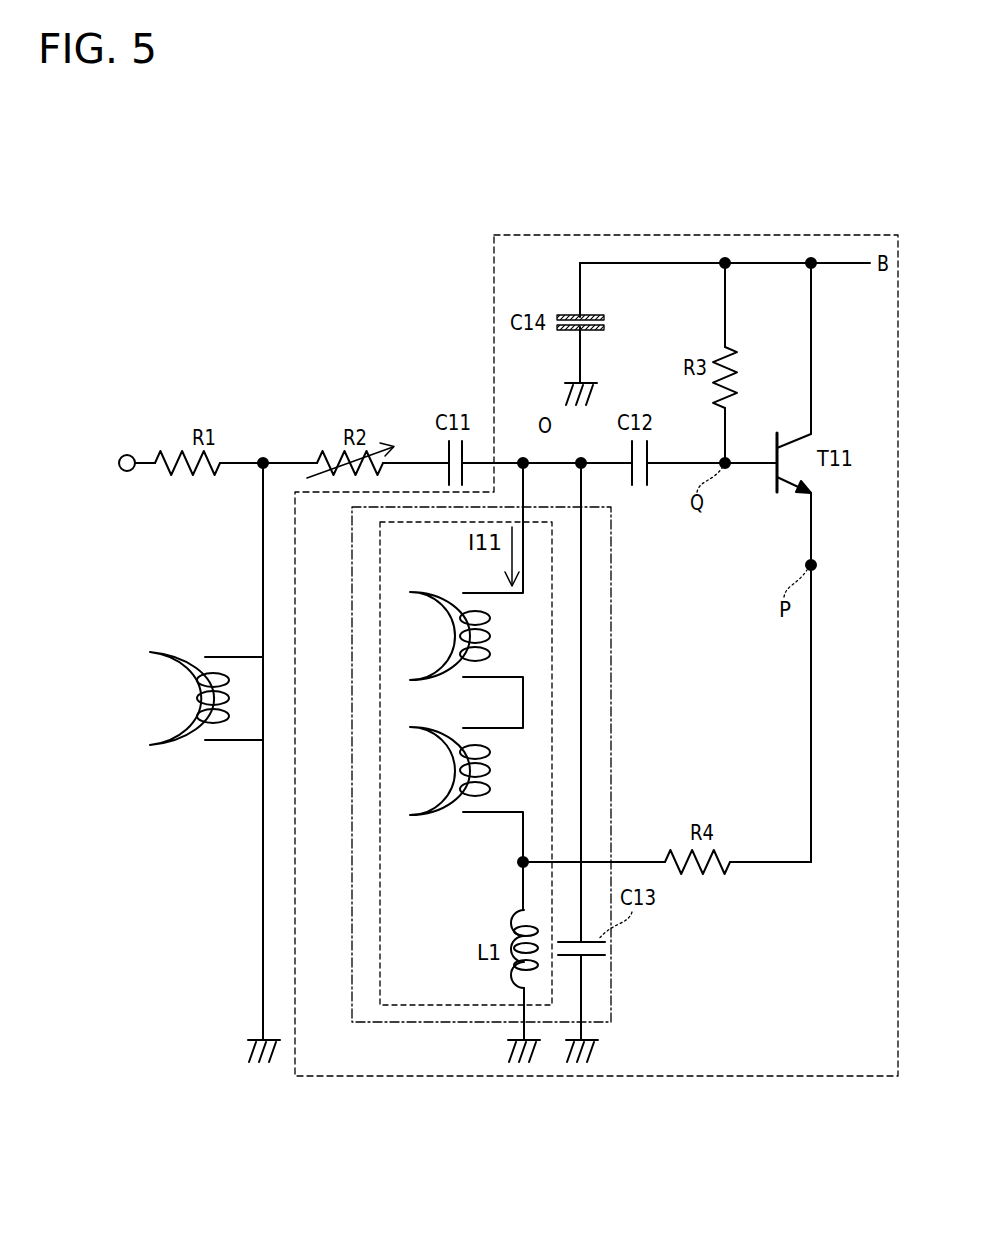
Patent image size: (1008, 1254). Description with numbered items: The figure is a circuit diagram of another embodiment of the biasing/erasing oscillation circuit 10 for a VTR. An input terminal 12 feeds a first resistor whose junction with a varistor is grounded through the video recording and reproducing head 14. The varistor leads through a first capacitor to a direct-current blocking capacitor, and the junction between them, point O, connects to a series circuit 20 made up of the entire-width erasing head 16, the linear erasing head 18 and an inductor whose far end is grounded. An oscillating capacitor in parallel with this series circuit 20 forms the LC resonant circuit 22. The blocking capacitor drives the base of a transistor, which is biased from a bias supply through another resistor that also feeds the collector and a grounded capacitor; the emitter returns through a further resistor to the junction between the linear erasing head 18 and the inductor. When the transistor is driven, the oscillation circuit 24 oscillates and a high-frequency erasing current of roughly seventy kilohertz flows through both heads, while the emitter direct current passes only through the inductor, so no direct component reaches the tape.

The biasing/erasing oscillation circuit 10 is at (401, 232).
The terminal 12 is at (133, 455).
The video recording and reproducing head 14 is at (184, 650).
The entire-width erasing head 16 is at (440, 588).
The linear erasing head 18 is at (436, 820).
The series circuit 20 is at (380, 785).
The LC resonant circuit 22 is at (611, 598).
The oscillation circuit 24 is at (494, 372).